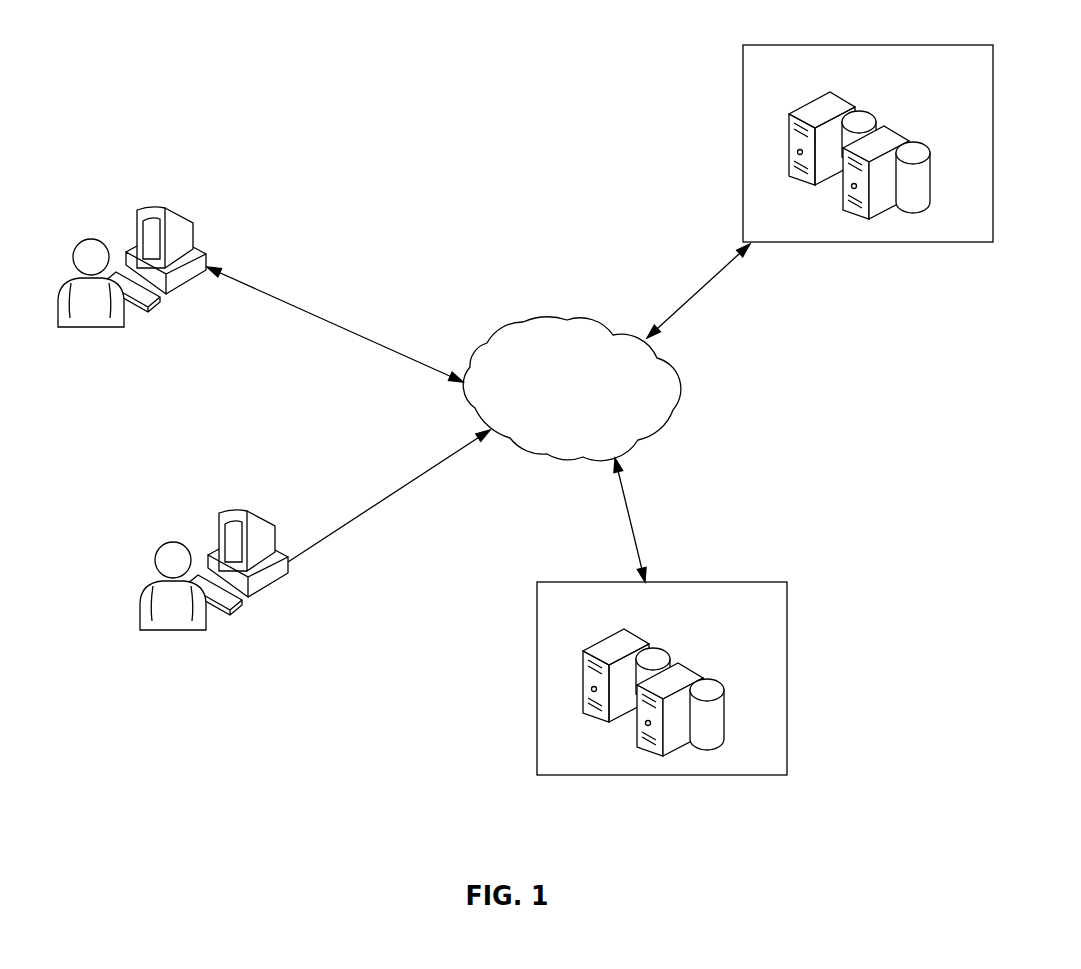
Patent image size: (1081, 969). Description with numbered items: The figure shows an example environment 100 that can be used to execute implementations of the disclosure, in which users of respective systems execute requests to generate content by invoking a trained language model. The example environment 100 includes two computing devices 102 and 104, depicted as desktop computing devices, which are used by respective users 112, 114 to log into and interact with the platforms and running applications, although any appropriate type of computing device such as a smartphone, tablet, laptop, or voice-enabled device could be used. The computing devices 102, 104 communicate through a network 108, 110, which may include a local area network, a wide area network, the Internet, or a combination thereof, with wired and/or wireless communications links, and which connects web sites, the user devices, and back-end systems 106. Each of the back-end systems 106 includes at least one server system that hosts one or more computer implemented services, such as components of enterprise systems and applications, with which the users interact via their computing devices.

The example environment 100 is at (512, 60).
The computing device 102 is at (146, 203).
The computing device 104 is at (230, 508).
The back-end systems 106 is at (993, 155).
The network 108 is at (603, 320).
The network 110 is at (103, 329).
The user 112 is at (180, 632).
The user 114 is at (875, 118).